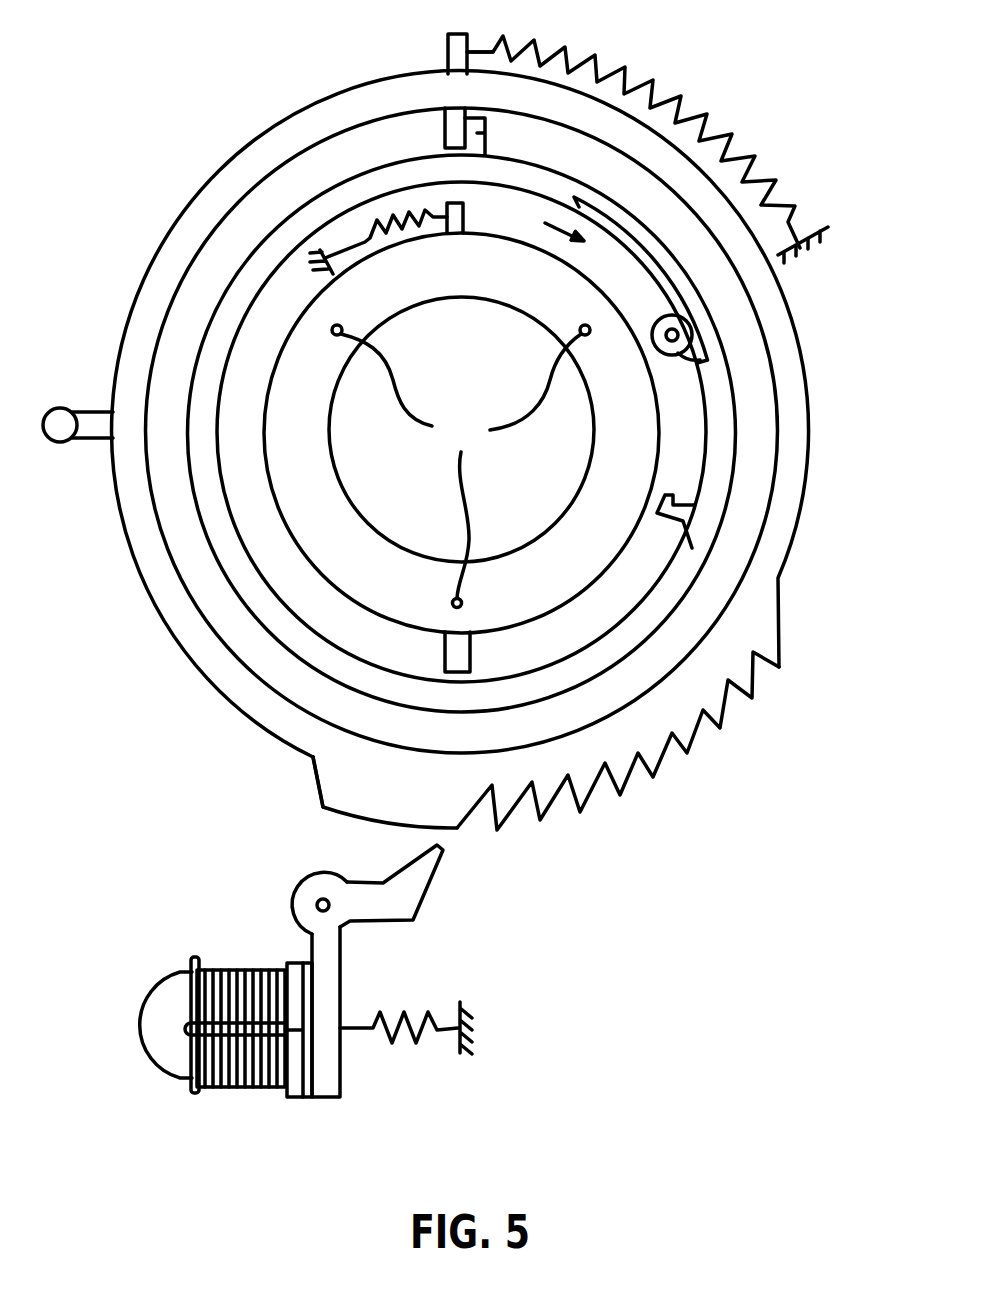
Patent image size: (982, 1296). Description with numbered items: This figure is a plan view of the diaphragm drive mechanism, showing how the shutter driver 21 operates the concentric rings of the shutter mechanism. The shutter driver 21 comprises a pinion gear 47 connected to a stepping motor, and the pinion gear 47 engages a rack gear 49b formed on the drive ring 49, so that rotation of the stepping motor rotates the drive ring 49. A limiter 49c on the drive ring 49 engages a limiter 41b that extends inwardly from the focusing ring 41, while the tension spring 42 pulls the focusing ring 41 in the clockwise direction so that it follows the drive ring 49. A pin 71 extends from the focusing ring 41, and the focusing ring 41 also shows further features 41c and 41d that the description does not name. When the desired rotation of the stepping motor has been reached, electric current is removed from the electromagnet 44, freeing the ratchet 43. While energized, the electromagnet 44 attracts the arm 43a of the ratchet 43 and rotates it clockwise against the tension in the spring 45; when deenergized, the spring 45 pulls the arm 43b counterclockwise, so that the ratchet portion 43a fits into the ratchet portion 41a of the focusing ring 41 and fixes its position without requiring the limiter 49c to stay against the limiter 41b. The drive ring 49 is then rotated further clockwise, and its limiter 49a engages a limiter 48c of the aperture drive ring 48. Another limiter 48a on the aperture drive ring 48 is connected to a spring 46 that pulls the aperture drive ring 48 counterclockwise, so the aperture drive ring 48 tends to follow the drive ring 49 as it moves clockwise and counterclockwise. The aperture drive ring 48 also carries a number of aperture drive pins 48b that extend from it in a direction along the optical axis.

The shutter driver 21 is at (795, 855).
The focusing ring 41 is at (805, 418).
The ratchet portion 41a is at (812, 678).
The limiter 41b is at (458, 127).
The outer tab of plate 41c is at (448, 52).
The notch of plate 41d is at (343, 782).
The tension spring 42 is at (672, 97).
The ratchet 43 is at (357, 910).
The arm 43a is at (423, 873).
The arm 43b is at (308, 1096).
The electromagnet 44 is at (227, 1087).
The spring 45 is at (413, 1037).
The spring 46 is at (368, 238).
The pinion gear 47 is at (698, 363).
The aperture drive ring 48 is at (610, 533).
The limiter 48a is at (463, 215).
The aperture drive pins 48b is at (461, 466).
The limiter 48c is at (455, 656).
The drive ring 49 is at (672, 596).
The limiter 49a is at (672, 500).
The rack gear 49b is at (668, 280).
The limiter 49c is at (480, 126).
The pin 71 is at (63, 445).